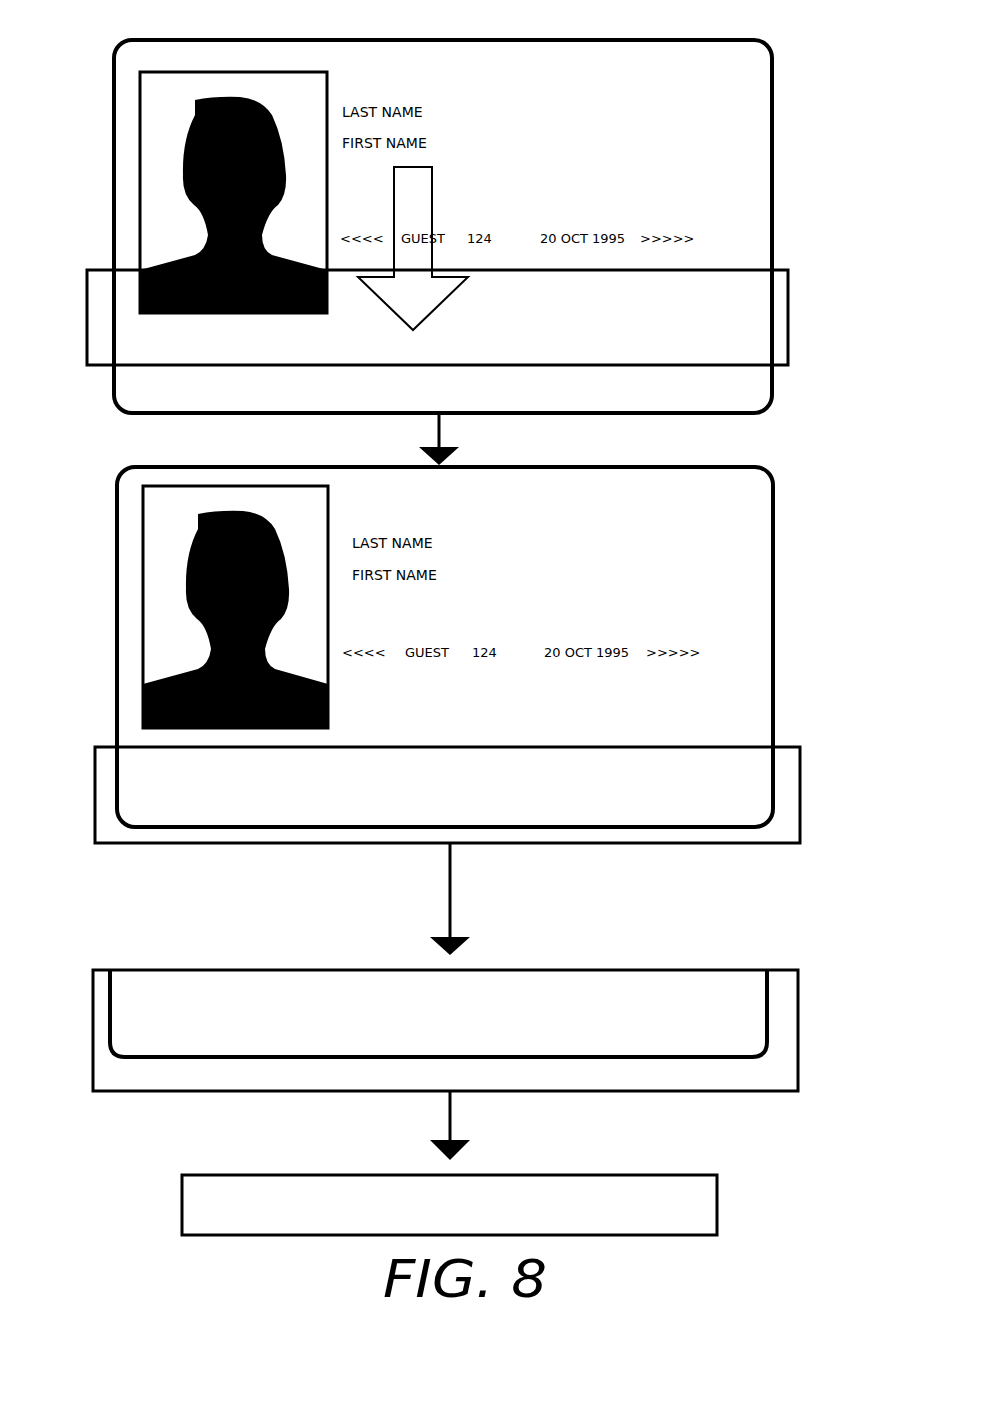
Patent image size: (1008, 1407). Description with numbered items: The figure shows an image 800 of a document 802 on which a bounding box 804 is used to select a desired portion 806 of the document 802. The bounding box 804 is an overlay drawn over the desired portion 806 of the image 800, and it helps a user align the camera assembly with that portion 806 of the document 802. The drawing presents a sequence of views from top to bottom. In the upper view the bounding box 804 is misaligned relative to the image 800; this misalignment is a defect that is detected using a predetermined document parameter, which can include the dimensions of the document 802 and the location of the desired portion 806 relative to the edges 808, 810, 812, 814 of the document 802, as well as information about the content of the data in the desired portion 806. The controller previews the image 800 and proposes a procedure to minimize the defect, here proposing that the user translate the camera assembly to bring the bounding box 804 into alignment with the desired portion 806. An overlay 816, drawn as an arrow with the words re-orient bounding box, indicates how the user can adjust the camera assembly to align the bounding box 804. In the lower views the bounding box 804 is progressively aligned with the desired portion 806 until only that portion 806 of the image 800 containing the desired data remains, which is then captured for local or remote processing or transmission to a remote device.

The image 800 is at (810, 73).
The document 802 is at (585, 131).
The bounding box 804 is at (790, 300).
The portion 806 is at (674, 379).
The edge 808 is at (113, 206).
The edge 810 is at (773, 207).
The edge 812 is at (636, 41).
The edge 814 is at (543, 414).
The overlay 816 is at (613, 180).